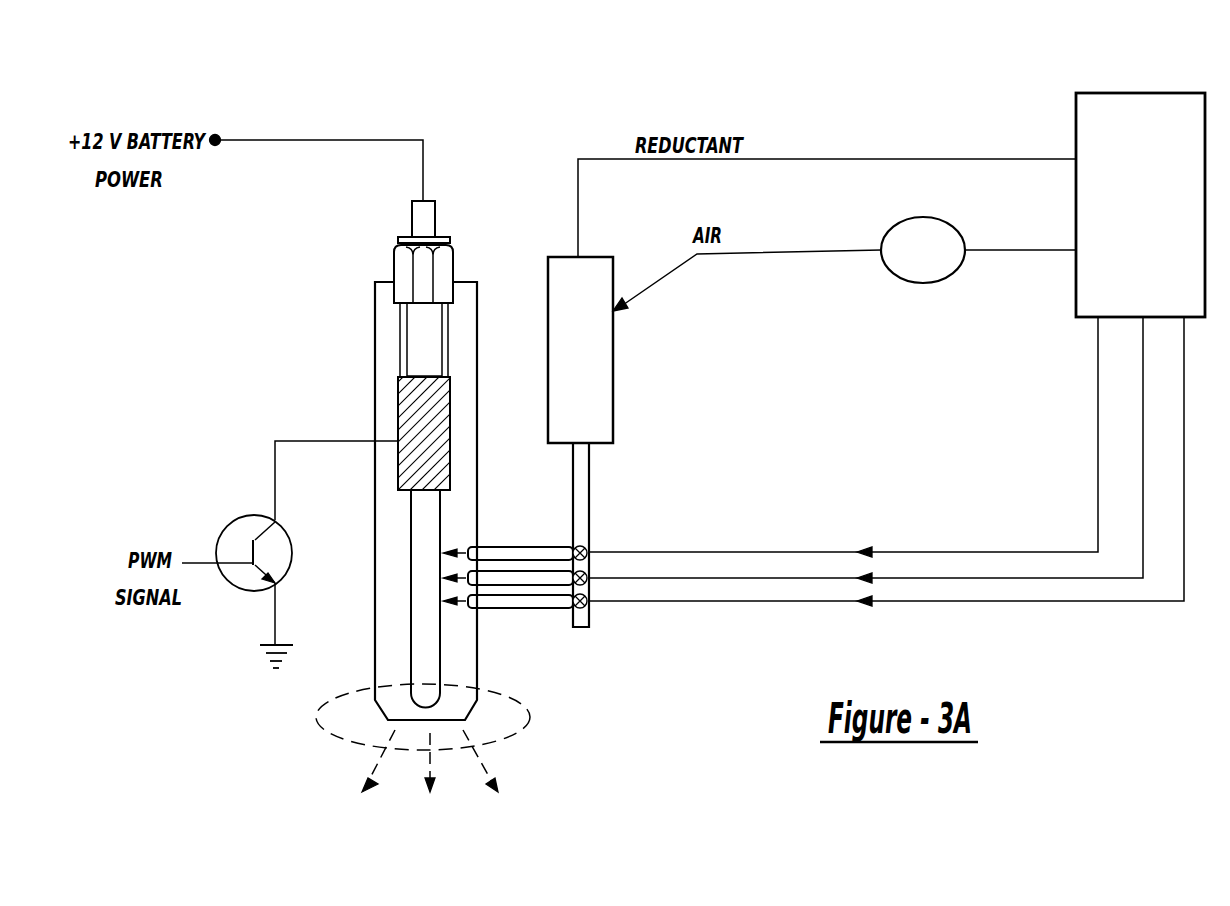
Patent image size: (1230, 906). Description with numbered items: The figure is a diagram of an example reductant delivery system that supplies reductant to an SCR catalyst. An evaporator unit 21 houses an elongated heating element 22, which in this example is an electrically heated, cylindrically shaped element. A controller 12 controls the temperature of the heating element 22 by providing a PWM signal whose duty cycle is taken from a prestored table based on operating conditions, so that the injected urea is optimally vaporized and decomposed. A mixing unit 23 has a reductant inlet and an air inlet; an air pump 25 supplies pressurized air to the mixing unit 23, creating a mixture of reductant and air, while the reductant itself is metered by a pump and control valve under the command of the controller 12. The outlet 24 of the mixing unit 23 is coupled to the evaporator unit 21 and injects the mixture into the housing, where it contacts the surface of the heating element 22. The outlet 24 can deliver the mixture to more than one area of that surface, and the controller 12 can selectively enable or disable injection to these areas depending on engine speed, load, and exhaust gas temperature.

The controller 12 is at (1088, 93).
The evaporator unit 21 is at (491, 303).
The heating element 22 is at (436, 521).
The mixing unit 23 is at (613, 402).
The outlet 24 is at (583, 497).
The air pump 25 is at (925, 218).